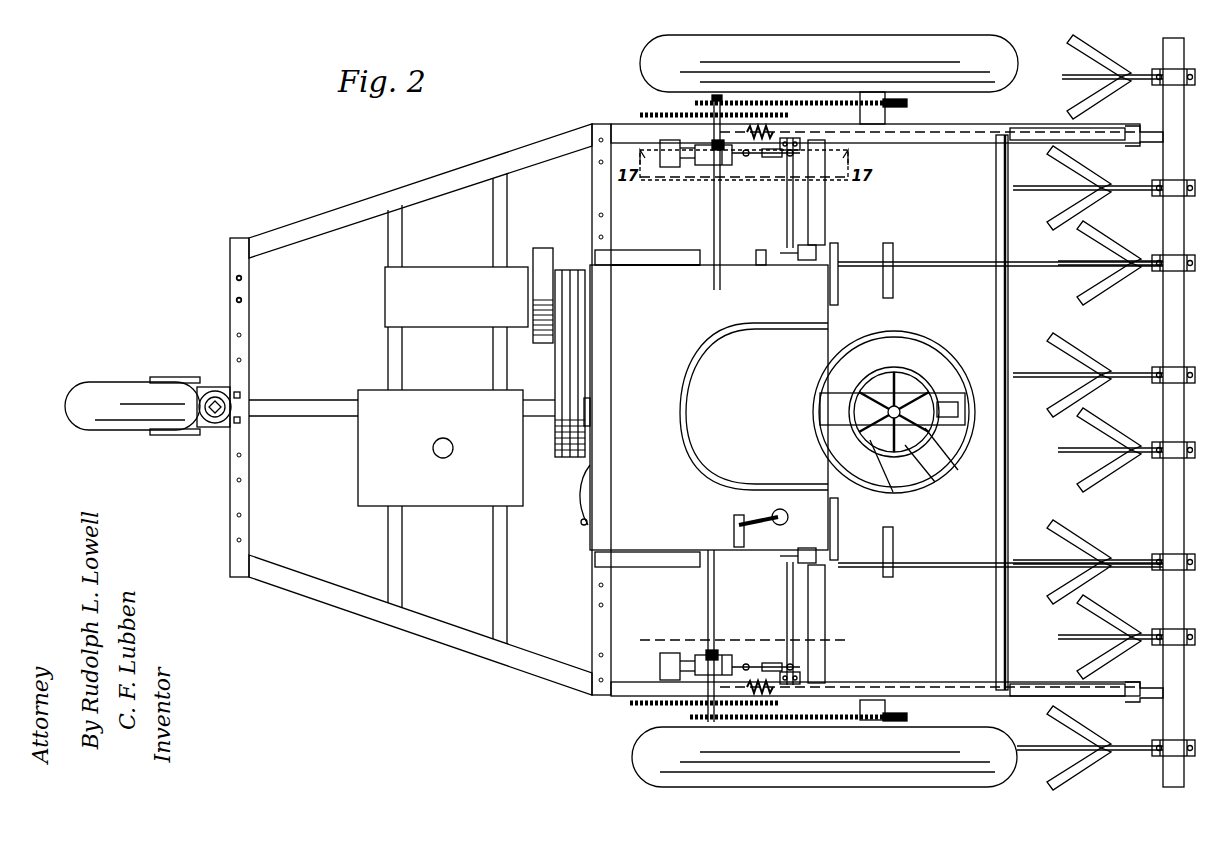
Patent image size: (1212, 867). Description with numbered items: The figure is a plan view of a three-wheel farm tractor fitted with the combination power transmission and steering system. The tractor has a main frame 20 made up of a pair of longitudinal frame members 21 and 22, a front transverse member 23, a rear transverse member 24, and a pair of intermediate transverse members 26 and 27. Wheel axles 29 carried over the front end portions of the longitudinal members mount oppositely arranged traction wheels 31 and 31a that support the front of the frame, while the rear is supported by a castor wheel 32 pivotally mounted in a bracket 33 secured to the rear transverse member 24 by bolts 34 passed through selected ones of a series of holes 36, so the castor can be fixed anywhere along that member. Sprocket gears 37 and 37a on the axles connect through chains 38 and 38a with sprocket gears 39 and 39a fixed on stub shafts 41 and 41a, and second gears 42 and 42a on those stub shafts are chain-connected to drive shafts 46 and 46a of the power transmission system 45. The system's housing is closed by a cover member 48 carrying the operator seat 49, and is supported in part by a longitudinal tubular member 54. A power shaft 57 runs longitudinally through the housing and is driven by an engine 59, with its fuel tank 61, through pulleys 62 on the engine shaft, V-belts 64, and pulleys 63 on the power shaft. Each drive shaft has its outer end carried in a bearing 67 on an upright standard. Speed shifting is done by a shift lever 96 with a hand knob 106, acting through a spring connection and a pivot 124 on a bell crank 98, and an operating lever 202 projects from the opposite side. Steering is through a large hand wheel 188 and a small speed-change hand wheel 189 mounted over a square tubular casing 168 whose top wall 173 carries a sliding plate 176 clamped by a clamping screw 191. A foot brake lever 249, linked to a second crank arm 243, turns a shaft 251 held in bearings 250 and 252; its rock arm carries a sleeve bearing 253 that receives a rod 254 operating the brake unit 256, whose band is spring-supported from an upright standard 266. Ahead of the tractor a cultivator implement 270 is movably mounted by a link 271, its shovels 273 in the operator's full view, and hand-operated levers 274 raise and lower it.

The main frame 20 is at (550, 136).
The longitudinal frame member 21 is at (931, 140).
The longitudinal frame member 22 is at (572, 686).
The front transverse member 23 is at (1010, 483).
The rear transverse member 24 is at (232, 487).
The intermediate transverse member 26 is at (612, 213).
The intermediate transverse member 27 is at (826, 214).
The wheel axle 29 is at (836, 100).
The traction wheel 31 is at (1003, 45).
The traction wheel 31a is at (640, 760).
The castor wheel 32 is at (98, 392).
The bracket 33 is at (212, 385).
The bolts 34 is at (241, 419).
The holes 36 is at (243, 278).
The sprocket gear 37 is at (888, 112).
The sprocket gear 37a is at (870, 712).
The chain 38 is at (908, 104).
The chain 38a is at (908, 717).
The sprocket gear 39 is at (695, 103).
The sprocket gear 39a is at (690, 717).
The stub shaft 41 is at (717, 98).
The stub shaft 41a is at (709, 722).
The second gear 42 is at (640, 113).
The second gear 42a is at (630, 704).
The power transmission system 45 is at (674, 262).
The drive shaft 46 is at (722, 194).
The drive shaft 46a is at (716, 586).
The cover member 48 is at (726, 290).
The seat 49 is at (722, 354).
The longitudinal tubular member 54 is at (655, 258).
The power shaft 57 is at (591, 405).
The engine 59 is at (440, 282).
The fuel tank 61 is at (423, 410).
The pulleys 62 is at (548, 285).
The pulleys 63 is at (562, 454).
The V-belts 64 is at (580, 350).
The bearing 67 is at (728, 108).
The shift lever 96 is at (733, 516).
The bell crank 98 is at (580, 503).
The hand knob 106 is at (772, 513).
The pivot 124 is at (580, 525).
The square tubular casing 168 is at (886, 468).
The top wall 173 is at (942, 450).
The sliding plate 176 is at (950, 442).
The hand wheel 188 is at (940, 353).
The hand wheel 189 is at (910, 364).
The clamping screw 191 is at (950, 399).
The operating lever 202 is at (761, 250).
The second crank arm 243 is at (839, 278).
The foot brake lever 249 is at (892, 250).
The bearing 250 is at (817, 256).
The shaft 251 is at (796, 196).
The bearing 252 is at (802, 144).
The sleeve bearing 253 is at (762, 664).
The rod 254 is at (752, 156).
The brake unit 256 is at (700, 167).
The upright standard 266 is at (666, 162).
The cultivator implement 270 is at (1135, 280).
The link 271 is at (1110, 140).
The shovels 273 is at (1118, 630).
The hand-operated levers 274 is at (1030, 268).